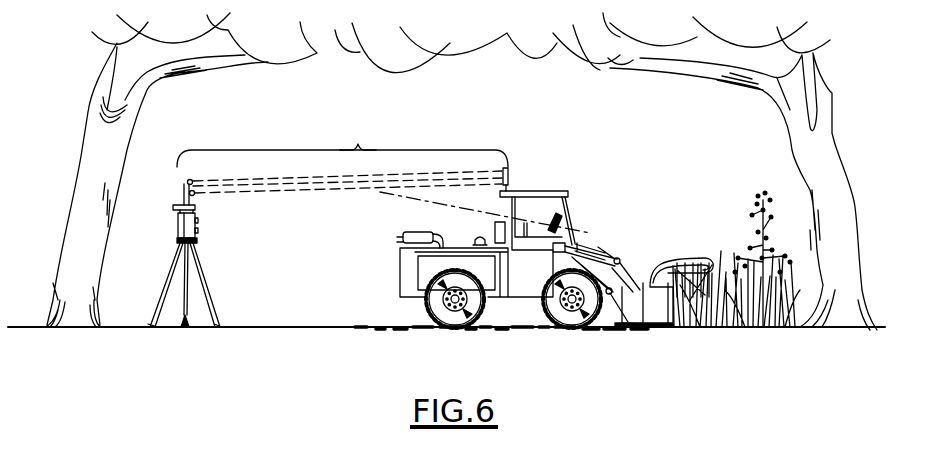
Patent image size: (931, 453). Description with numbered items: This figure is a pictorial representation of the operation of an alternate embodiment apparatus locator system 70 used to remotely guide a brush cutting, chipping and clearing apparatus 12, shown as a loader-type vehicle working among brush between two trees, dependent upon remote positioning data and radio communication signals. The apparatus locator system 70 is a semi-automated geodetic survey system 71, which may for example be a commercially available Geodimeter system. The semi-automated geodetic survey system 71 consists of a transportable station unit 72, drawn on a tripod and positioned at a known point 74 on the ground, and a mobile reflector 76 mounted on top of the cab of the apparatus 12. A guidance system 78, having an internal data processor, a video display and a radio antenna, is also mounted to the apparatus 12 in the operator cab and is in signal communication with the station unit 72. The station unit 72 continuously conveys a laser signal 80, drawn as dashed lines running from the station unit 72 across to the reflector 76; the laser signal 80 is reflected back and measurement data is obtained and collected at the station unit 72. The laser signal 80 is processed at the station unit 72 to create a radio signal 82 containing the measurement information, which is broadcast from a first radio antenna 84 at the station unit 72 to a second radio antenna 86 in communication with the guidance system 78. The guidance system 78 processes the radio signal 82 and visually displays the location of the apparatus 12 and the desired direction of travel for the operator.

The vehicle (loader tractor) 12 is at (555, 259).
The apparatus locator system 70 is at (288, 140).
The semi-automated geodetic survey system 71 is at (358, 133).
The transportable station unit 72 is at (182, 228).
The known point 74 is at (173, 325).
The mobile reflector 76 is at (510, 168).
The guidance system 78 is at (568, 228).
The laser signal 80 is at (400, 183).
The radio signal 82 is at (307, 192).
The first radio antenna 84 is at (195, 195).
The second radio antenna 86 is at (556, 222).